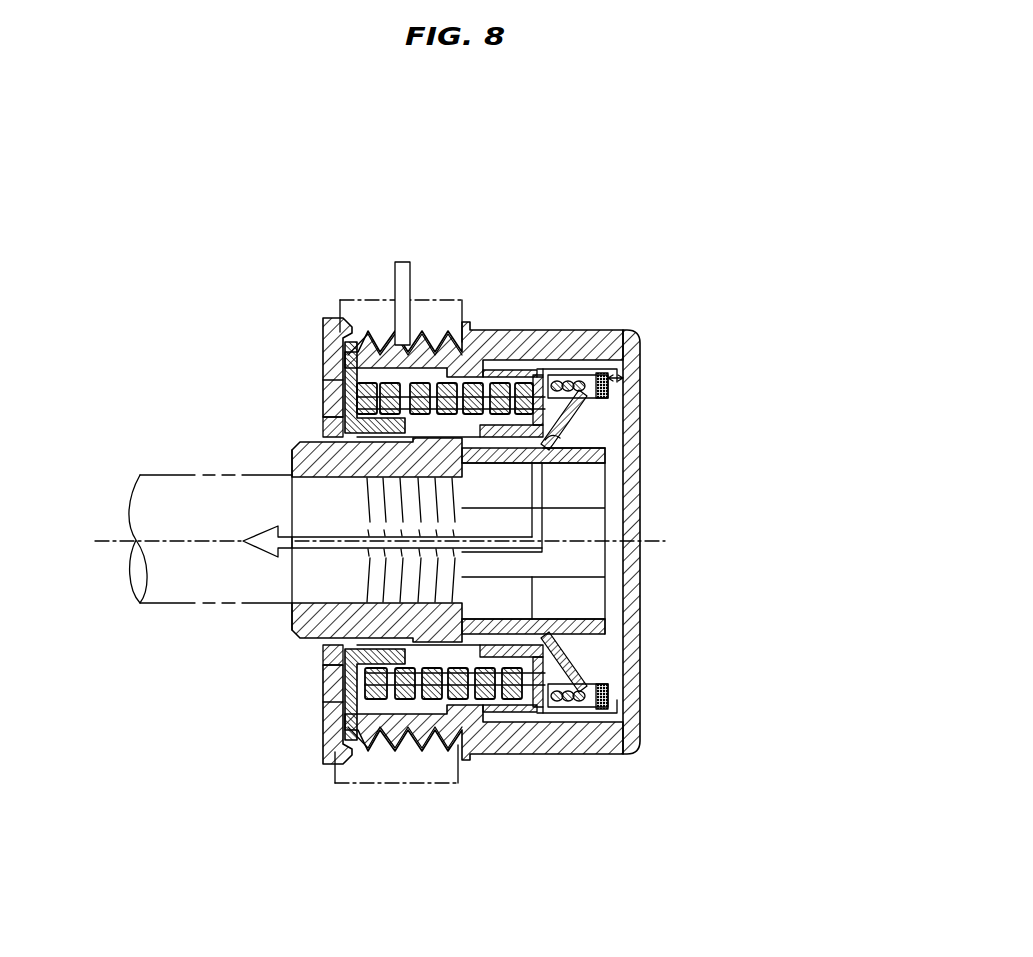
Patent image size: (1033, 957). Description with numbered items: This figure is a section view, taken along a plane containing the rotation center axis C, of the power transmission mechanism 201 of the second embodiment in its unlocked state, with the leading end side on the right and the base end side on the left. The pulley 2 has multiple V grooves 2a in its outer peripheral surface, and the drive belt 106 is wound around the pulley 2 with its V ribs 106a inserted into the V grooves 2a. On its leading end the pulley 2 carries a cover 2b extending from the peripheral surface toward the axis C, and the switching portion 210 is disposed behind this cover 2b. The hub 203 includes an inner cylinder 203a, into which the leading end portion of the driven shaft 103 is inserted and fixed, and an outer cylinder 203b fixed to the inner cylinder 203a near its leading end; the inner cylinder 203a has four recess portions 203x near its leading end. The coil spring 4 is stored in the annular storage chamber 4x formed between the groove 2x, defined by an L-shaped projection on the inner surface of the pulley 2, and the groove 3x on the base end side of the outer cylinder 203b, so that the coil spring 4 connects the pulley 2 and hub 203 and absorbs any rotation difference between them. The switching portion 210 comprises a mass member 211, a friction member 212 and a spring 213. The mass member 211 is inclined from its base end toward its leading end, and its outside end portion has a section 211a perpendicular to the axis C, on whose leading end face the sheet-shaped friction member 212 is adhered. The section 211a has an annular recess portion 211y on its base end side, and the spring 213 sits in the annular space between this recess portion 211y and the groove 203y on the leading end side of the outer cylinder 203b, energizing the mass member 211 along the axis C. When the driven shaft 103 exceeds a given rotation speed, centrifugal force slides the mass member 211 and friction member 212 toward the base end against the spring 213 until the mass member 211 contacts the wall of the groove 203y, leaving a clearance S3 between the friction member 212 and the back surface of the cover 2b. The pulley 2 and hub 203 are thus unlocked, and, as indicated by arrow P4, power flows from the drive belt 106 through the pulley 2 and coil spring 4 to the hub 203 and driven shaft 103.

The power transmission mechanism 201 is at (687, 181).
The pulley 2 is at (490, 329).
The V grooves 2a is at (446, 340).
The cover 2b is at (640, 347).
The groove 2x is at (335, 430).
The groove 3x is at (478, 466).
The coil spring 4 is at (357, 400).
The storage chamber 4x is at (461, 440).
The driven shaft 103 is at (172, 474).
The drive belt 106 is at (357, 298).
The V ribs 106a is at (342, 335).
The hub 203 is at (707, 473).
The inner cylinder 203a is at (574, 470).
The outer cylinder 203b is at (510, 465).
The recess portions 203x is at (606, 447).
The groove 203y is at (538, 378).
The switching portion 210 is at (697, 357).
The mass member 211 is at (585, 410).
The section 211a is at (582, 378).
The recess portion 211y is at (566, 378).
The friction member 212 is at (610, 386).
The spring 213 is at (590, 392).
The axis C is at (97, 538).
The arrow P4 is at (406, 289).
The clearance S3 is at (620, 376).